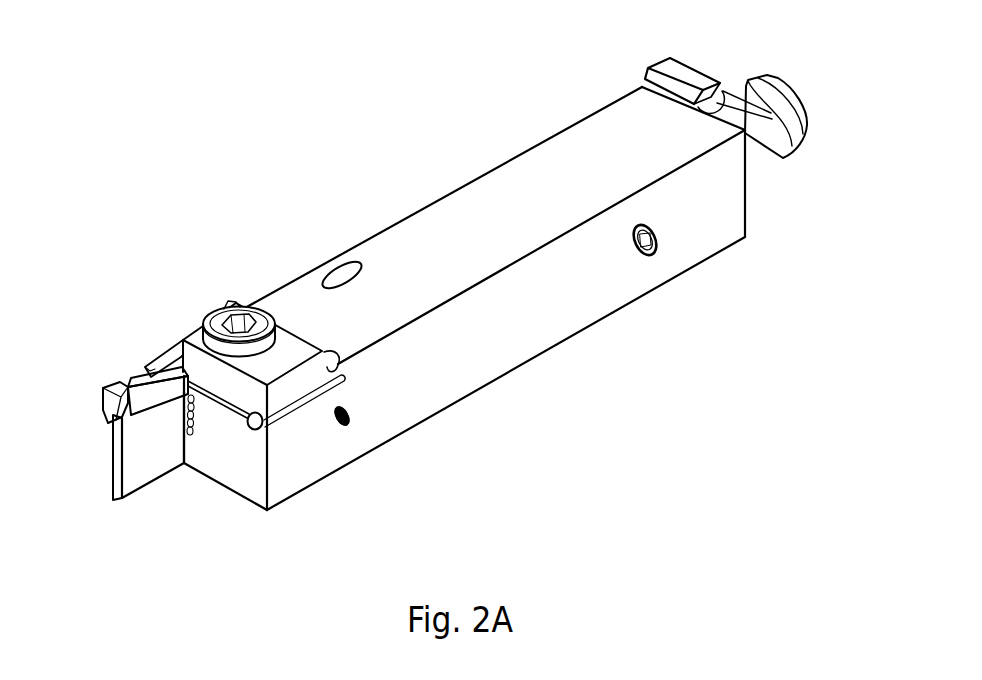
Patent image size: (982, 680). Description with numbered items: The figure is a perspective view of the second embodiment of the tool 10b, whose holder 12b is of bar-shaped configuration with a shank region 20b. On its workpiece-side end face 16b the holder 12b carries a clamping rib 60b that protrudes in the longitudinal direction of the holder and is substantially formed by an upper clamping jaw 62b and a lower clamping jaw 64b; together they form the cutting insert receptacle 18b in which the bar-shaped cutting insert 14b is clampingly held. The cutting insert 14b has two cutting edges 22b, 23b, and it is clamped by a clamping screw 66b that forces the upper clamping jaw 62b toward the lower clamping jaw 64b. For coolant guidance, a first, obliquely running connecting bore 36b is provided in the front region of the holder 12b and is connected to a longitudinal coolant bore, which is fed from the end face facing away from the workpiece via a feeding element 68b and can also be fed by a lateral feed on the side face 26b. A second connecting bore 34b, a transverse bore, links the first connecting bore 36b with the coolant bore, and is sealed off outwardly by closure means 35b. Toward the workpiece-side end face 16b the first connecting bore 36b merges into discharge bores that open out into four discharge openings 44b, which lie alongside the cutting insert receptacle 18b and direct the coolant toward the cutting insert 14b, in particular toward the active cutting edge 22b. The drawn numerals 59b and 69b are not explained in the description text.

The tool 10b is at (449, 297).
The holder 12b is at (722, 258).
The cutting insert 14b is at (131, 378).
The workpiece-side end face 16b is at (248, 484).
The cutting insert receptacle 18b is at (131, 426).
The shank region 20b is at (505, 375).
The cutting edge 22b is at (105, 389).
The cutting edge 23b is at (565, 160).
The side face 26b is at (590, 307).
The second connecting bore 34b is at (340, 424).
The closure means 35b is at (348, 423).
The first connecting bore 36b is at (344, 278).
The discharge openings 44b is at (199, 436).
The fastening hole 59b is at (650, 252).
The clamping rib 60b is at (153, 338).
The upper clamping jaw 62b is at (163, 348).
The lower clamping jaw 64b is at (146, 470).
The clamping screw 66b is at (263, 327).
The feeding element 68b is at (689, 76).
The adjustment nut 69b is at (793, 153).